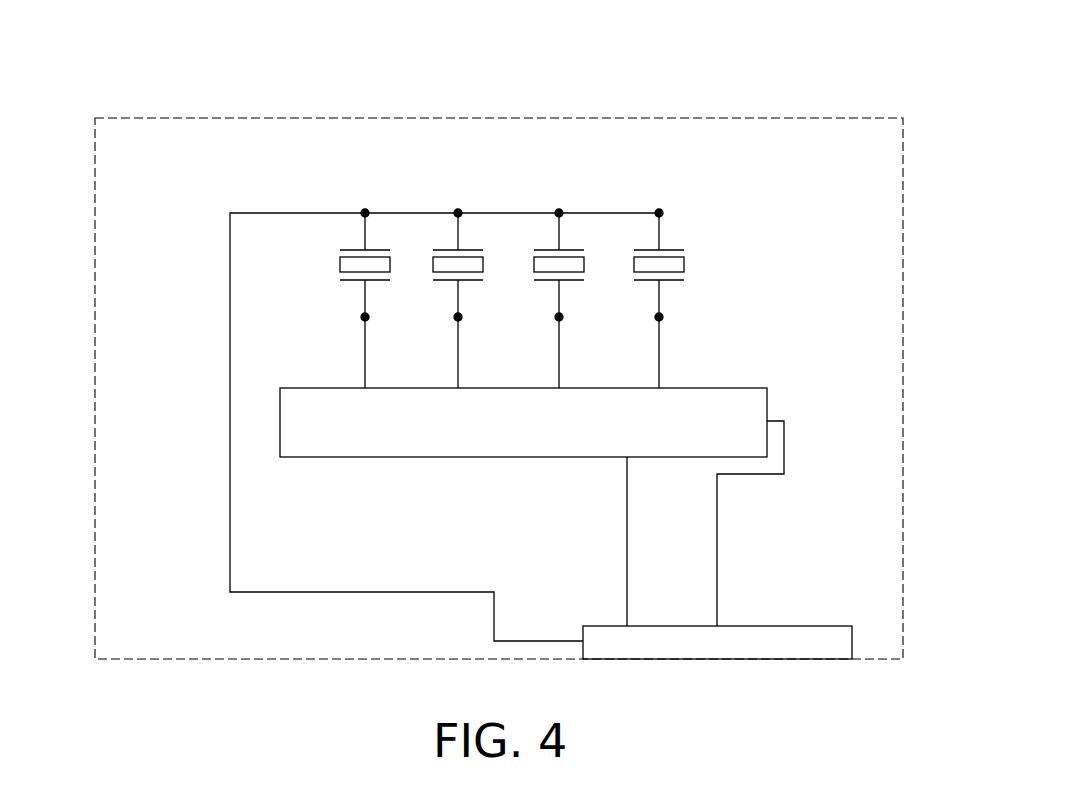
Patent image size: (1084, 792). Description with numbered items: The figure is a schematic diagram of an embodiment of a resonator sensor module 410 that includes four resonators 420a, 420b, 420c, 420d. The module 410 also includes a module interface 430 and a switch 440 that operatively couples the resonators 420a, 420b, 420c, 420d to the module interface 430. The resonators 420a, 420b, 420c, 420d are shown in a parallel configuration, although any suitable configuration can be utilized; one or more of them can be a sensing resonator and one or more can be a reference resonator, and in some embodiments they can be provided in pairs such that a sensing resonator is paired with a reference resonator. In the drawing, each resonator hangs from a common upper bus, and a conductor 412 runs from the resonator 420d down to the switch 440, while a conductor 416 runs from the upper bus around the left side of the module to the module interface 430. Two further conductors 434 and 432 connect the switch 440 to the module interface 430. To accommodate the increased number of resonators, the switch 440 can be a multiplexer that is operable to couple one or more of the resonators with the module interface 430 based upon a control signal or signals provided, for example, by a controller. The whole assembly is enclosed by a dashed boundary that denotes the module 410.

The resonator sensor module 410 is at (584, 72).
The wire 412 is at (659, 351).
The wire 416 is at (230, 545).
The resonator 420a is at (329, 287).
The resonator 420b is at (437, 287).
The resonator 420c is at (537, 287).
The resonator 420d is at (637, 287).
The module interface 430 is at (750, 660).
The conductive path 432 is at (717, 552).
The conductive path 434 is at (627, 526).
The switch 440 is at (749, 388).